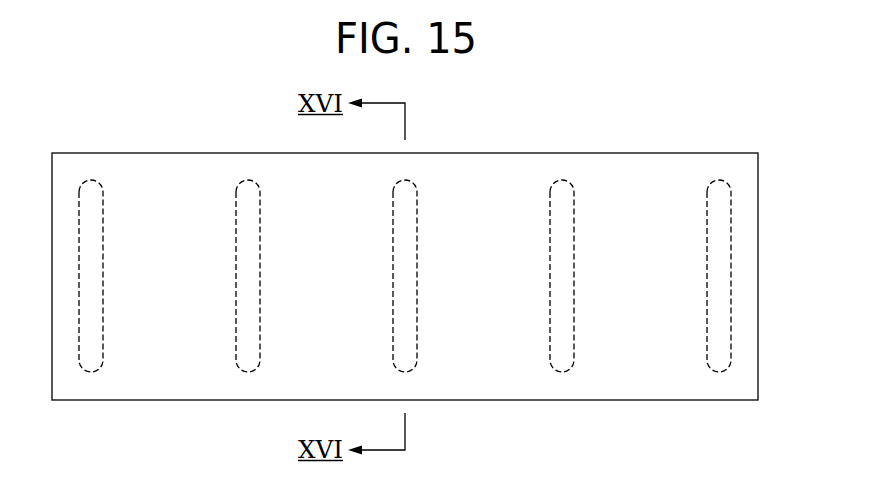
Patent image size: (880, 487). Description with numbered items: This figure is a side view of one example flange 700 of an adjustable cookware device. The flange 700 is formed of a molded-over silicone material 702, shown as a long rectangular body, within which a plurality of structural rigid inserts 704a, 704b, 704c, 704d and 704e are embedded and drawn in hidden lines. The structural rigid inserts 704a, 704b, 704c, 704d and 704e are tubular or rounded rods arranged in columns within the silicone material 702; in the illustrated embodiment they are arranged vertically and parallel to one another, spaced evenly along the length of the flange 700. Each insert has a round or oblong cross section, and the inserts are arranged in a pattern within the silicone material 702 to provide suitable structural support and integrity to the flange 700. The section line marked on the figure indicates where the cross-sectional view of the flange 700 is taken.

The flange 700 is at (542, 104).
The silicone material 702 is at (725, 165).
The structural rigid insert 704a is at (91, 372).
The structural rigid insert 704b is at (248, 372).
The structural rigid insert 704c is at (405, 372).
The structural rigid insert 704d is at (562, 372).
The structural rigid insert 704e is at (719, 372).